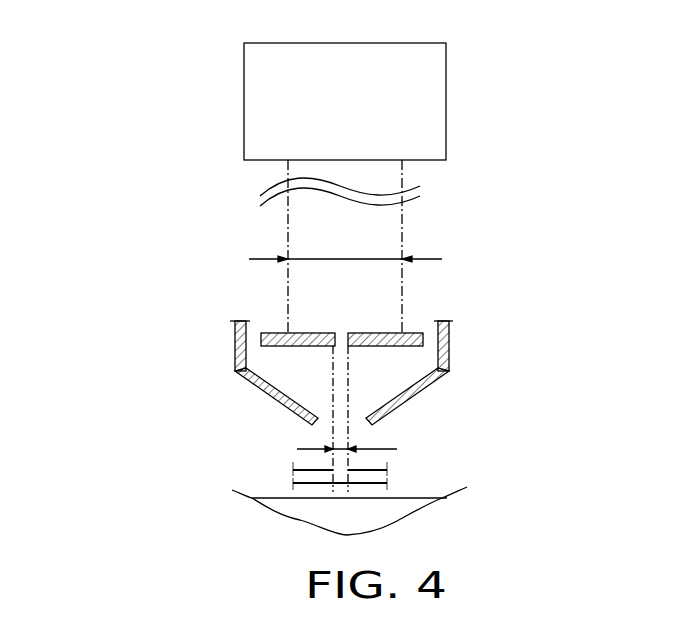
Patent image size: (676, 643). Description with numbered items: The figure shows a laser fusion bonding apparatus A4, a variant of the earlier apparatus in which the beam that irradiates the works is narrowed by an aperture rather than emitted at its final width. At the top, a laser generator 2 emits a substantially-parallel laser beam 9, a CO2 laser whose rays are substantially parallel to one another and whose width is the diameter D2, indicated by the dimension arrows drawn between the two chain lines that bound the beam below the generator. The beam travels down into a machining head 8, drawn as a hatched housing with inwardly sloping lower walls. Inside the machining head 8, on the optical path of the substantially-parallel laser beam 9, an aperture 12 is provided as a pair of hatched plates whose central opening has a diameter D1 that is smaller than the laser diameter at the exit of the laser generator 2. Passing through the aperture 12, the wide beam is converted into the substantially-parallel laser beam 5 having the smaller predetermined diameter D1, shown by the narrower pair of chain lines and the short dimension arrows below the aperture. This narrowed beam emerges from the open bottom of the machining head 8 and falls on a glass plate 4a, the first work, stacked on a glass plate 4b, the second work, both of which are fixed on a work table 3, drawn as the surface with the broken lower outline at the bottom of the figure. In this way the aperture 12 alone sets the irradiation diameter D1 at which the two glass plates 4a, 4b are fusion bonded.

The laser fusion bonding apparatus A4 is at (128, 158).
The laser generator 2 is at (446, 103).
The substantially-parallel laser beam 9 is at (402, 234).
The diameter D2 is at (364, 259).
The aperture 12 is at (413, 326).
The machining head 8 is at (235, 343).
The substantially-parallel laser beam 5 is at (348, 391).
The predetermined diameter D1 is at (357, 435).
The glass plate 4a is at (383, 472).
The glass plate 4b is at (380, 492).
The work table 3 is at (410, 498).